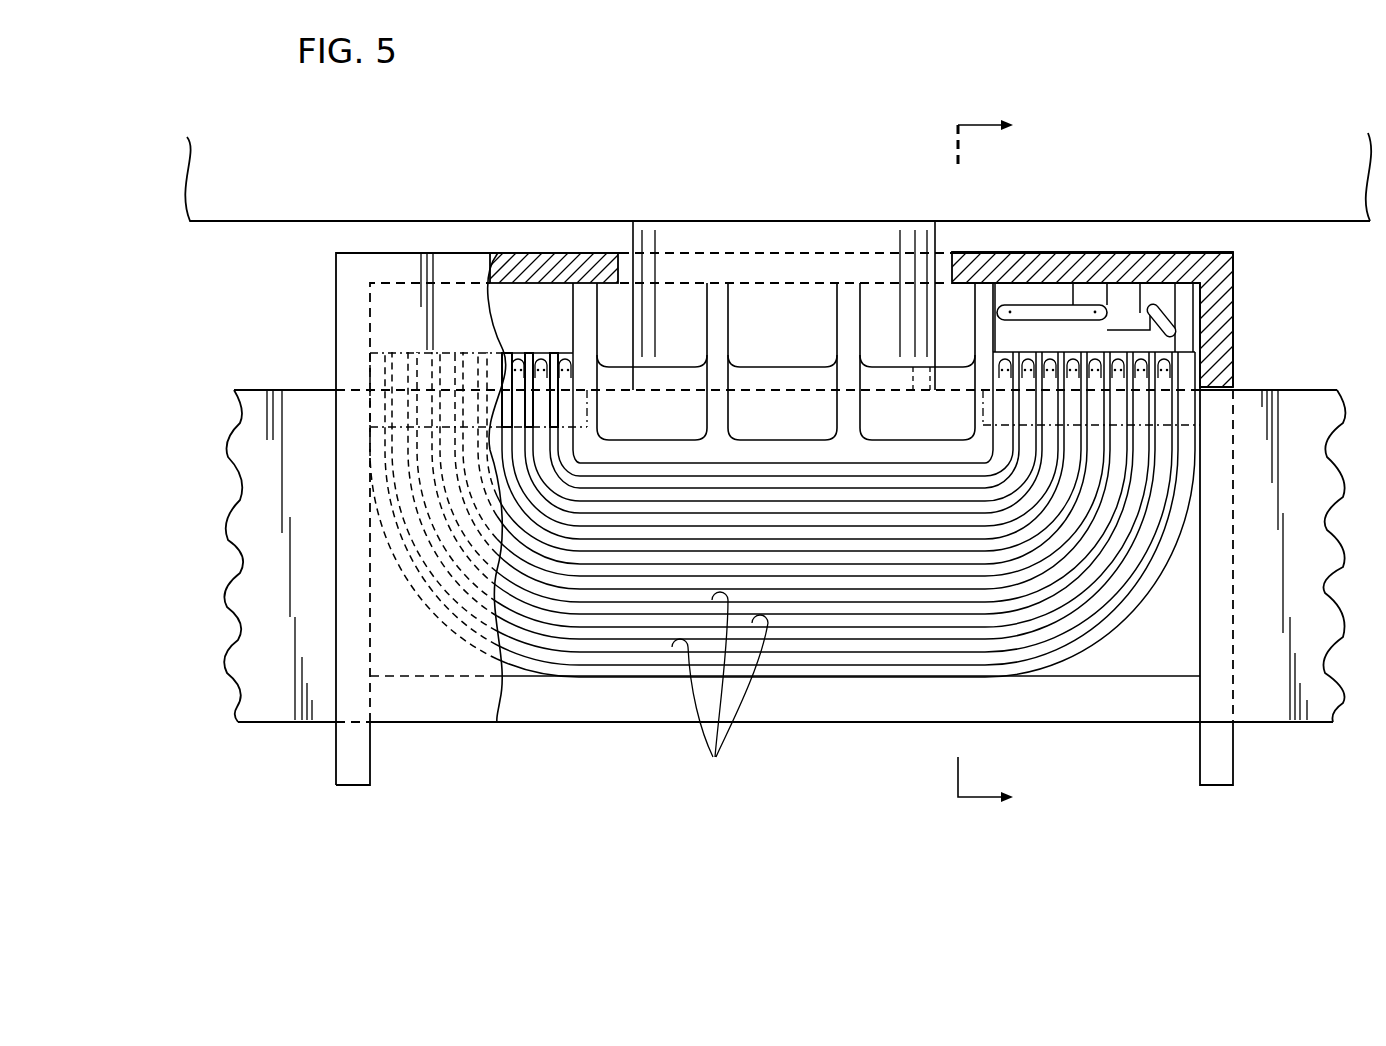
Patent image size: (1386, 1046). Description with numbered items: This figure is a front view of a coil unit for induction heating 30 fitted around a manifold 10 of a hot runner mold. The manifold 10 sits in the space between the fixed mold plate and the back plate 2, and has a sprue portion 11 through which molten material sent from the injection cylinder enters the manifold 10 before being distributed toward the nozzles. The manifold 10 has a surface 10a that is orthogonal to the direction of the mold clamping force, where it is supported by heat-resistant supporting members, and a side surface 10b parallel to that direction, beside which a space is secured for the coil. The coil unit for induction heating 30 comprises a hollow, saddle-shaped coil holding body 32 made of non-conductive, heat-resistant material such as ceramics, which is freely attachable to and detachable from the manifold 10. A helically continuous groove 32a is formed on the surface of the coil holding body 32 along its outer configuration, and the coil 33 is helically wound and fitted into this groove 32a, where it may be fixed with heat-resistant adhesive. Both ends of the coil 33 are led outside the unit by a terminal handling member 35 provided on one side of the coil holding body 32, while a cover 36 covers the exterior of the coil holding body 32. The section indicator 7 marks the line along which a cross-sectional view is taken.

The back plate 2 is at (465, 222).
The section line VII-VII 7 is at (999, 468).
The manifold 10 is at (521, 730).
The surface 10a is at (821, 724).
The side surface 10b is at (574, 692).
The sprue portion 11 is at (800, 320).
The coil unit for induction heating 30 is at (310, 288).
The coil holding body 32 is at (962, 323).
The groove 32a is at (720, 698).
The coil 33 is at (1017, 607).
The terminal handling member 35 is at (1125, 302).
The cover 36 is at (543, 262).